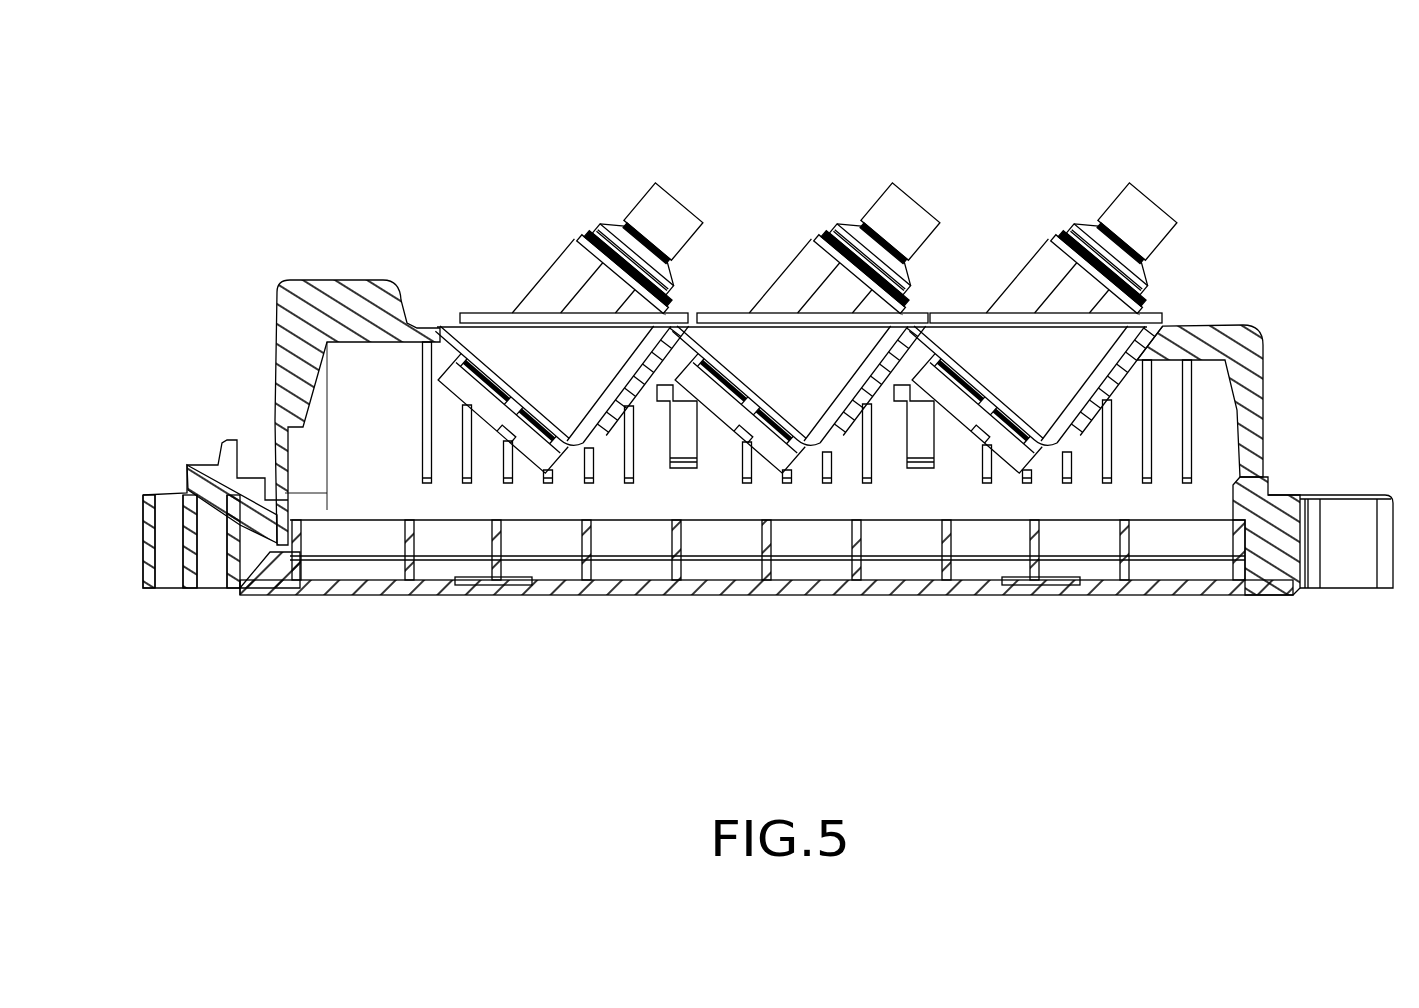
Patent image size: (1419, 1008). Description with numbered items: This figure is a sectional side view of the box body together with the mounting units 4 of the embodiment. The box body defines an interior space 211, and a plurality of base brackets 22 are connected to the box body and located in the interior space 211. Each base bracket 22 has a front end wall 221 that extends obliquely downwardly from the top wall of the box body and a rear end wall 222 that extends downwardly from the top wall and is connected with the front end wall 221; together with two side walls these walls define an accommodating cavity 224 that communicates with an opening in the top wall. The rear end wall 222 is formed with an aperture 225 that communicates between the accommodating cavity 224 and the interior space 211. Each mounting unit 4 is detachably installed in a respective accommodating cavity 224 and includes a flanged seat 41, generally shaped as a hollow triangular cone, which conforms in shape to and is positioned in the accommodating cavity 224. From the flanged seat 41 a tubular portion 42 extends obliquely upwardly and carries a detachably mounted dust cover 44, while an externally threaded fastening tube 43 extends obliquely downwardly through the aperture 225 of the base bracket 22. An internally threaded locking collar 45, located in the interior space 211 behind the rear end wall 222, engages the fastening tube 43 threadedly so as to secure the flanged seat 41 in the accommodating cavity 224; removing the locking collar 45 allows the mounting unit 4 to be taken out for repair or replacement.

The mounting unit 4 is at (887, 209).
The flanged seat 41 is at (1050, 342).
The tubular portion 42 is at (1040, 258).
The externally threaded fastening tube 43 is at (983, 354).
The dust cover 44 is at (1150, 215).
The internally threaded locking collar 45 is at (967, 501).
The base bracket 22 is at (600, 455).
The interior space 211 is at (433, 500).
The front end wall 221 is at (1194, 380).
The rear end wall 222 is at (1085, 575).
The accommodating cavity 224 is at (1145, 349).
The aperture 225 is at (982, 503).